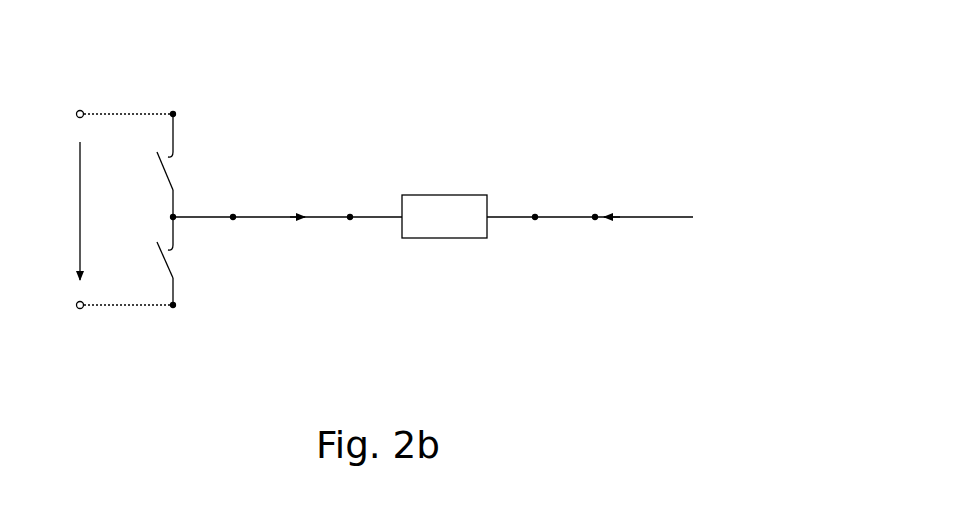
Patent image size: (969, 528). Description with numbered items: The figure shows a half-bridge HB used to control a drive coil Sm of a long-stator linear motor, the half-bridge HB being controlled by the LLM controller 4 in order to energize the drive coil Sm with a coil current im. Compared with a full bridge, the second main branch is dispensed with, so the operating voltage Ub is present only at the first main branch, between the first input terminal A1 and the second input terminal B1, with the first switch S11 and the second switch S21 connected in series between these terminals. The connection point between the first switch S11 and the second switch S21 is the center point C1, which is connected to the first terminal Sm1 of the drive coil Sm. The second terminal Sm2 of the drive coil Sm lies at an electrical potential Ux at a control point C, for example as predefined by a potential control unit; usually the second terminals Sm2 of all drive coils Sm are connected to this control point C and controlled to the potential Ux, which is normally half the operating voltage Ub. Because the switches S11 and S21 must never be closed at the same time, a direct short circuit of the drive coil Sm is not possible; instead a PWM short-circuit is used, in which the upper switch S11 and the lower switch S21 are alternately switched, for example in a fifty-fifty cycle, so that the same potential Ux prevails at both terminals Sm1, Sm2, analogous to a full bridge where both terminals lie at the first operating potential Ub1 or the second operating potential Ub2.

The half-bridge HB is at (475, 86).
The LLM controller 4 is at (589, 335).
The first operating potential Ub1 is at (115, 98).
The second operating potential Ub2 is at (115, 323).
The operating voltage Ub is at (62, 211).
The first input terminal A1 is at (174, 98).
The second input terminal B1 is at (171, 324).
The first switch S11 is at (149, 167).
The second switch S21 is at (147, 261).
The center point C1 is at (229, 199).
The coil current im is at (296, 198).
The first terminal of the drive coil Sm1 is at (361, 199).
The drive coil Sm is at (443, 193).
The second terminal of the drive coil Sm2 is at (534, 200).
The control point C is at (593, 200).
The electrical potential Ux is at (633, 199).